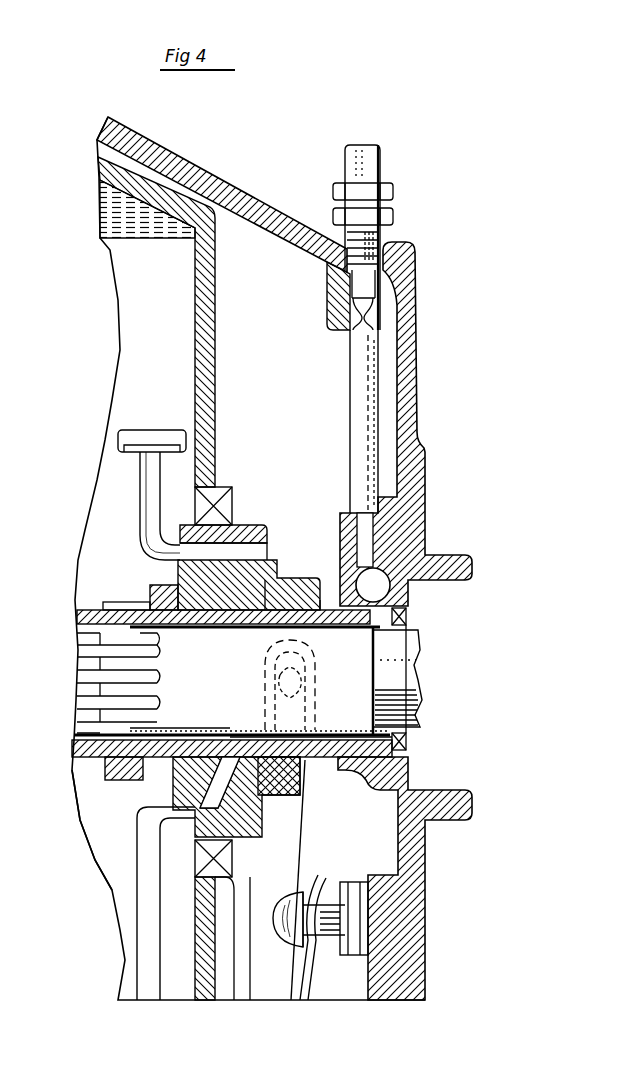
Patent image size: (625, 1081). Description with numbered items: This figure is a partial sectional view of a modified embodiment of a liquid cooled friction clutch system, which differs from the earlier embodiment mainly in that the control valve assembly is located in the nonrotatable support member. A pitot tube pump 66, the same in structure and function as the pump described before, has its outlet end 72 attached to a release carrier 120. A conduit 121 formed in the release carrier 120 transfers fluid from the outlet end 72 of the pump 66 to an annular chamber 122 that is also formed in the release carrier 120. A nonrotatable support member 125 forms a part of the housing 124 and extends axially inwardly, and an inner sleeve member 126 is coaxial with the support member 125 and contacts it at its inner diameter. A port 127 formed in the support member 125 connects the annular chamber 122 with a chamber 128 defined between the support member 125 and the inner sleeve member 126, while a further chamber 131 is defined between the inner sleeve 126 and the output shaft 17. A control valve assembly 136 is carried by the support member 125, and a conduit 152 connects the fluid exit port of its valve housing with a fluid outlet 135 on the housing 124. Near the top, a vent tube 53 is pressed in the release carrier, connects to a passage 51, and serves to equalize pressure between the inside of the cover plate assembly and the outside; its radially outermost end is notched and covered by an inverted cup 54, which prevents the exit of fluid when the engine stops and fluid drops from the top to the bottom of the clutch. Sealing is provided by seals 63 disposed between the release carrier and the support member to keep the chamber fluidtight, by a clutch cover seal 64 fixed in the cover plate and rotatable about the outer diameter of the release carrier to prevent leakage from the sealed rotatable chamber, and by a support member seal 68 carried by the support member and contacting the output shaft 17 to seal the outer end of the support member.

The housing 124 is at (240, 187).
The fluid outlet 135 is at (383, 232).
The conduit 152 is at (352, 362).
The inverted cup 54 is at (135, 430).
The vent tube 53 is at (140, 497).
The clutch cover seal 64 is at (233, 496).
The passage 51 is at (246, 541).
The control valve assembly 136 is at (467, 538).
The release carrier 120 is at (280, 578).
The seals 63 is at (160, 596).
The nonrotatable support member 125 is at (78, 610).
The output shaft 17 is at (420, 660).
The inner sleeve member 126 is at (165, 626).
The chamber 131 is at (193, 728).
The port 127 is at (203, 737).
The annular chamber 122 is at (222, 757).
The chamber 128 is at (320, 737).
The support member seal 68 is at (407, 745).
The conduit 121 is at (193, 793).
The pitot tube pump 66 is at (127, 854).
The outlet end 72 is at (190, 822).